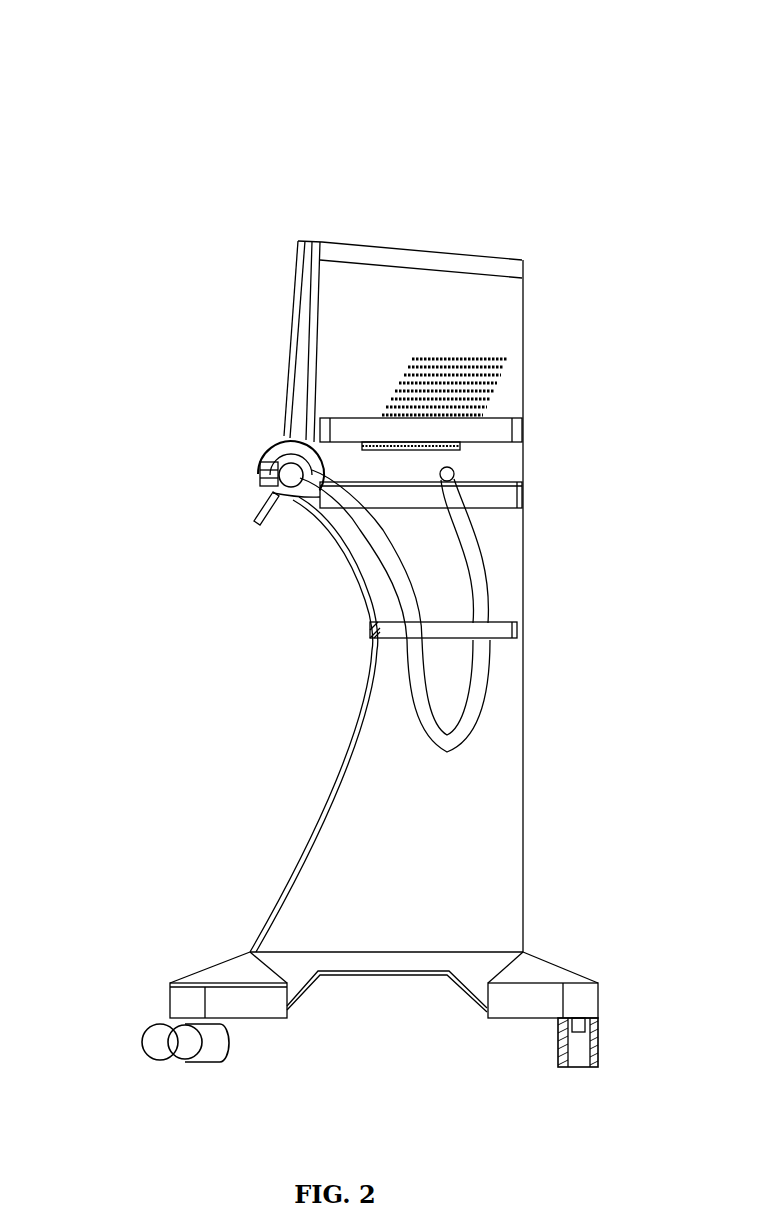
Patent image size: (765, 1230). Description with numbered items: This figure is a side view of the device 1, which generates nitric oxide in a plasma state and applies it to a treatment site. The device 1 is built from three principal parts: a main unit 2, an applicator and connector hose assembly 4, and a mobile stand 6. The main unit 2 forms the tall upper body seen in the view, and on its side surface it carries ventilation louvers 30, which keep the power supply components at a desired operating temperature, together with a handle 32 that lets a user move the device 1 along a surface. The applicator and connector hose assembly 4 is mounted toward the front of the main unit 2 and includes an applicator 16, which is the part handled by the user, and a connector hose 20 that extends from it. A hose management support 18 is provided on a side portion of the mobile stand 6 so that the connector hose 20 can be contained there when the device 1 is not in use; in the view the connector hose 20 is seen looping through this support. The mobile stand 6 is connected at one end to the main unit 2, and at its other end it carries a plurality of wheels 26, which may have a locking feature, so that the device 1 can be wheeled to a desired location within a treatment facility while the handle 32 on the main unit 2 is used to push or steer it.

The device 1 is at (255, 141).
The main unit 2 is at (544, 249).
The applicator and connector hose assembly 4 is at (266, 434).
The mobile stand 6 is at (261, 772).
The applicator 16 is at (268, 492).
The hose management support 18 is at (512, 625).
The connector hose 20 is at (370, 637).
The wheels 26 is at (222, 1047).
The ventilation louvers 30 is at (508, 370).
The handle 32 is at (526, 432).